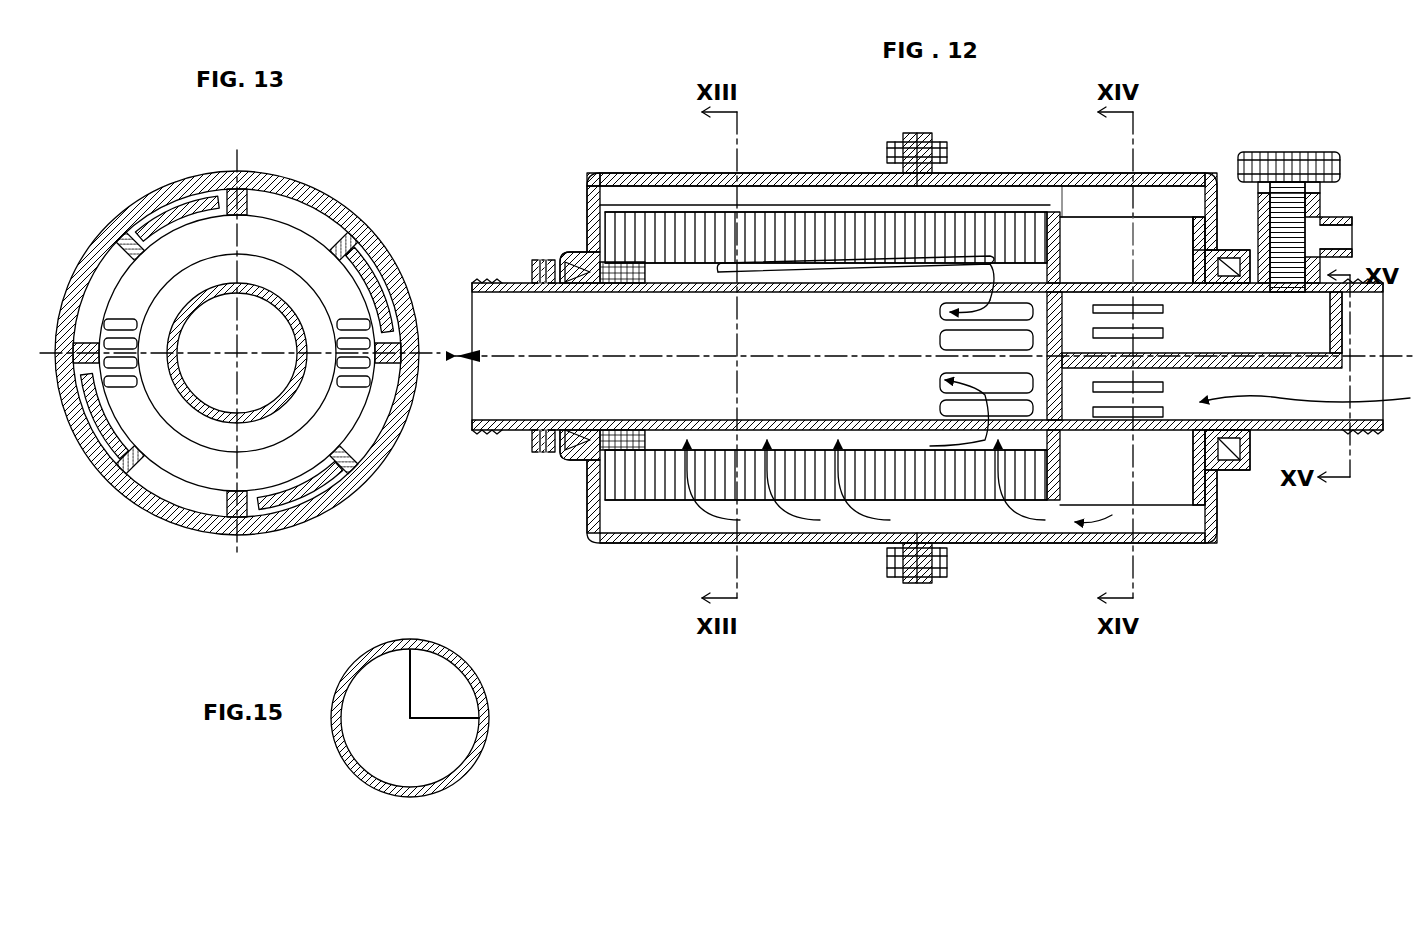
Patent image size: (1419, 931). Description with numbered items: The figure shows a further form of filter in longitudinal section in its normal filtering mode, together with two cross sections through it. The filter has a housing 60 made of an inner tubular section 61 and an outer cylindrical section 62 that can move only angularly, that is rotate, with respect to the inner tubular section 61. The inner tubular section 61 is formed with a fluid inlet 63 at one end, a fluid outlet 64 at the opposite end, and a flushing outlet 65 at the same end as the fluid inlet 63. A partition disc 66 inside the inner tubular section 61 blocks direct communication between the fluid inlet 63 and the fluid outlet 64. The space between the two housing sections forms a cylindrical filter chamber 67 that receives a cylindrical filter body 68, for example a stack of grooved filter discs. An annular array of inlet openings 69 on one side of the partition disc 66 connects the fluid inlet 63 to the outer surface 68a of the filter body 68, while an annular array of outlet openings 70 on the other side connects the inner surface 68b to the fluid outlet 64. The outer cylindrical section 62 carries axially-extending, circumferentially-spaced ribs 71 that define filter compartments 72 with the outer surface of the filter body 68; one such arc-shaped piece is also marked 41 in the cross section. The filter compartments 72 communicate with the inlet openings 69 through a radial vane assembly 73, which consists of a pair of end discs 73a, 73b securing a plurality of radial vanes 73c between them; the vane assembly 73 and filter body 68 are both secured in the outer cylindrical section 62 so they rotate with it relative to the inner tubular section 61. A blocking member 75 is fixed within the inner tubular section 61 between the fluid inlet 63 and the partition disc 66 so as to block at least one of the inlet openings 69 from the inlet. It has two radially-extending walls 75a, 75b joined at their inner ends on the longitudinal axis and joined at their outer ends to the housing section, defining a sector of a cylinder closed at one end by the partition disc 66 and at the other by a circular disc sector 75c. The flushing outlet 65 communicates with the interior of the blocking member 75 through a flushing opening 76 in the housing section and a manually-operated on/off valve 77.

In FIG. 13, the arc-shaped member 41 is at (370, 442).
In FIG. 12, the housing 60 is at (586, 200).
In FIG. 12, the inner tubular section 61 is at (500, 283).
In FIG. 12, the outer cylindrical section 62 is at (712, 172).
In FIG. 13, the outer cylindrical section 62 is at (318, 180).
In FIG. 12, the fluid inlet 63 is at (1365, 430).
In FIG. 12, the fluid outlet 64 is at (492, 420).
In FIG. 12, the flushing outlet 65 is at (1337, 215).
In FIG. 12, the partition disc 66 is at (1120, 395).
In FIG. 12, the cylindrical filter chamber 67 is at (975, 195).
In FIG. 12, the cylindrical filter body 68 is at (823, 210).
In FIG. 13, the cylindrical filter body 68 is at (372, 292).
In FIG. 12, the outer surface of filter body 68a is at (778, 215).
In FIG. 12, the inner surface of filter body 68b is at (770, 274).
In FIG. 12, the inlet openings 69 is at (1115, 290).
In FIG. 12, the outlet openings 70 is at (945, 335).
In FIG. 13, the ribs 71 is at (148, 220).
In FIG. 13, the filter compartments 72 is at (184, 202).
In FIG. 12, the radial vane assembly 73 is at (1117, 212).
In FIG. 12, the end disc 73a is at (1063, 237).
In FIG. 12, the end disc 73b is at (1188, 222).
In FIG. 12, the radial vanes 73c is at (1145, 240).
In FIG. 12, the blocking member 75 is at (1270, 368).
In FIG. 15, the blocking member 75 is at (440, 684).
In FIG. 12, the radially-extending wall 75a is at (1188, 352).
In FIG. 15, the radially-extending wall 75a is at (450, 722).
In FIG. 15, the radially-extending wall 75b is at (410, 665).
In FIG. 12, the circular disc sector 75c is at (1343, 320).
In FIG. 12, the flushing opening 76 is at (1290, 292).
In FIG. 12, the on/off valve 77 is at (1320, 152).